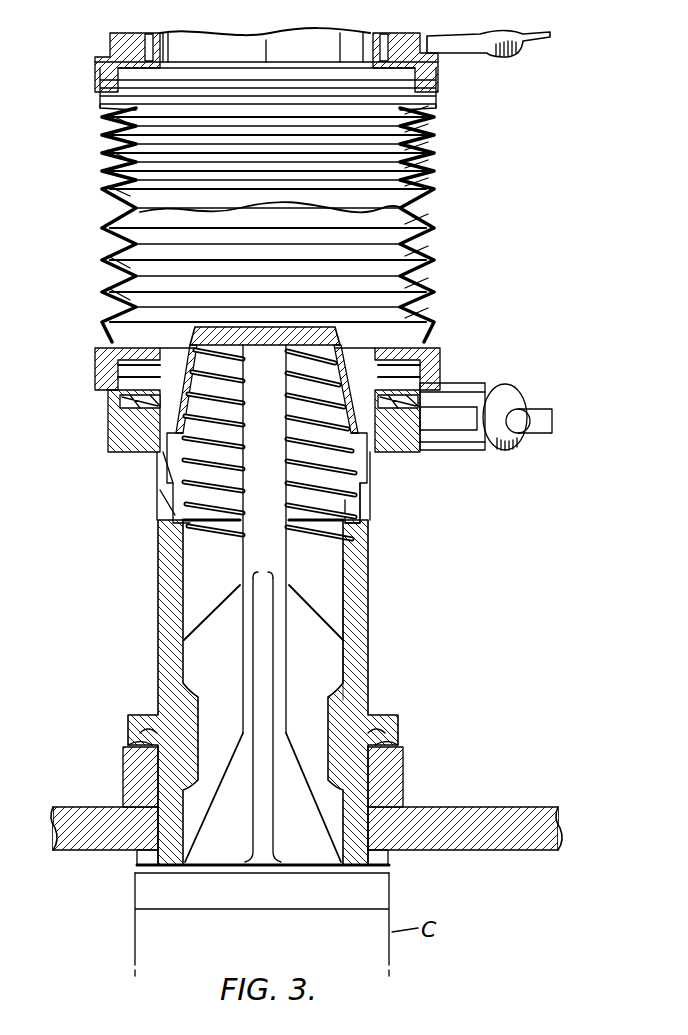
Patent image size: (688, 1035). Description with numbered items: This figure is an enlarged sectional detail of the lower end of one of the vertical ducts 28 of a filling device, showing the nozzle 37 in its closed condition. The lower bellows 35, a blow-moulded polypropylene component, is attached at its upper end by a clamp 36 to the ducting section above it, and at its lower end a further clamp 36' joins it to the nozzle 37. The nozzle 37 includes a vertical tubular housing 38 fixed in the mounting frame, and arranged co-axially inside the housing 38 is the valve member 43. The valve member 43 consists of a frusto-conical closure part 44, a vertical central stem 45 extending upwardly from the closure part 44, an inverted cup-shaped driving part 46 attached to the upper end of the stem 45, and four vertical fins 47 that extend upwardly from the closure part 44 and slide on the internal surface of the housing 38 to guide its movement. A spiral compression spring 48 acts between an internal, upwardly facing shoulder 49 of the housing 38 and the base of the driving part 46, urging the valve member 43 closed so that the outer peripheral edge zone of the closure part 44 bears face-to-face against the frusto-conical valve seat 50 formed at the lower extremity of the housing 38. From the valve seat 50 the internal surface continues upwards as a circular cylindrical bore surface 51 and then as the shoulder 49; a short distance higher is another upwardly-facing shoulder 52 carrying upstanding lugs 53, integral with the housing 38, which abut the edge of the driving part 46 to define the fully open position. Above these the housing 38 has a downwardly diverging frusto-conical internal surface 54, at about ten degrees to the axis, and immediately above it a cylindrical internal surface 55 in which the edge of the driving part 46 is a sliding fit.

The vertical duct 28 is at (438, 190).
The lower bellows 35 is at (437, 262).
The clamp 36 is at (488, 69).
The clamp 36' is at (486, 447).
The nozzle 37 is at (380, 609).
The vertical tubular housing 38 is at (372, 708).
The valve member 43 is at (290, 563).
The frusto-conical closure part 44 is at (292, 806).
The vertical central stem 45 is at (250, 553).
The driving part 46 is at (337, 337).
The vertical fins 47 is at (213, 661).
The spiral compression spring 48 is at (192, 363).
The shoulder 49 is at (172, 525).
The frusto-conical valve seat 50 is at (347, 863).
The circular cylindrical bore surface 51 is at (347, 614).
The shoulder 52 is at (168, 492).
The upstanding lugs 53 is at (376, 502).
The frusto-conical internal surface 54 is at (374, 460).
The cylindrical internal surface 55 is at (313, 437).